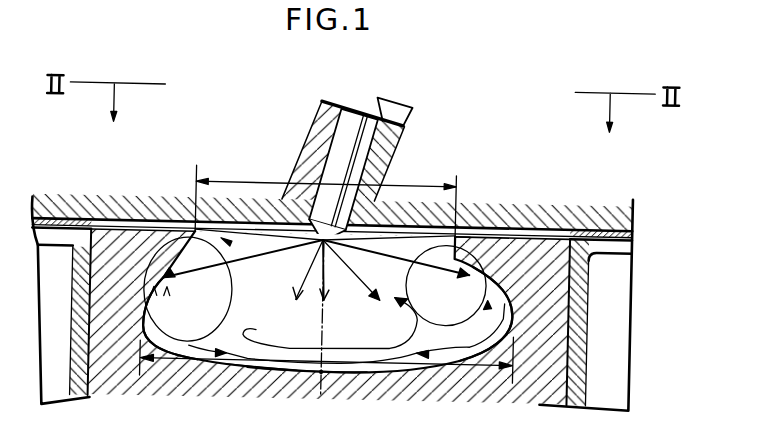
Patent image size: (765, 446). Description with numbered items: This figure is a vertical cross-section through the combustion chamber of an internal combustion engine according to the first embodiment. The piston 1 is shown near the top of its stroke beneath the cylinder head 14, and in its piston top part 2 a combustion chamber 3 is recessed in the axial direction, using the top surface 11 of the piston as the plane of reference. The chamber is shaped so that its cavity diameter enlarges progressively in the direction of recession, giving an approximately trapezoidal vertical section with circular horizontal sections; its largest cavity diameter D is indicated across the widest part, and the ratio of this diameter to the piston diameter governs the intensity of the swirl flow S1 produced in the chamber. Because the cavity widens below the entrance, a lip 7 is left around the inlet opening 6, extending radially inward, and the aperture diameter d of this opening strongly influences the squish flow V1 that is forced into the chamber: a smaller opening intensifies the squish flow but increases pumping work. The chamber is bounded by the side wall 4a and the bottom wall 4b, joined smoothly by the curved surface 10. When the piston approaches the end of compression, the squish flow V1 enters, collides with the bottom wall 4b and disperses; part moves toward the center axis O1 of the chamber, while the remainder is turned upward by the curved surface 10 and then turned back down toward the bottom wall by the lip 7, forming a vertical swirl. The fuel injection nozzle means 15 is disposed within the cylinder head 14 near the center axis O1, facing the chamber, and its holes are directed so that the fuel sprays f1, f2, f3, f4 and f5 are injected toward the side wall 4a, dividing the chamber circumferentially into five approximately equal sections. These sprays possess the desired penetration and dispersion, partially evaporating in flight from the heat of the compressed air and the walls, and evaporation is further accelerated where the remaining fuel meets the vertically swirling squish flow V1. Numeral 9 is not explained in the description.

The piston 1 is at (557, 327).
The piston top part 2 is at (553, 248).
The combustion chamber 3 is at (358, 304).
The side wall 4a is at (154, 311).
The bottom wall 4b is at (342, 376).
The inlet opening 6 is at (232, 245).
The lip 7 is at (490, 233).
The swirl flow in chamber 9 is at (186, 296).
The curved surface 10 is at (128, 384).
The top surface 11 is at (533, 224).
The cylinder head 14 is at (392, 156).
The fuel injection nozzle means 15 is at (364, 110).
The aperture diameter of the inlet opening d is at (223, 183).
The largest cavity diameter D is at (225, 366).
The swirl flow S1 is at (264, 374).
The center axis of the combustion chamber O1 is at (322, 375).
The squish flow V1 is at (232, 310).
The fuel spray f1 is at (243, 262).
The fuel spray f2 is at (306, 288).
The fuel spray f3 is at (358, 272).
The fuel spray f4 is at (413, 259).
The fuel spray f5 is at (334, 289).